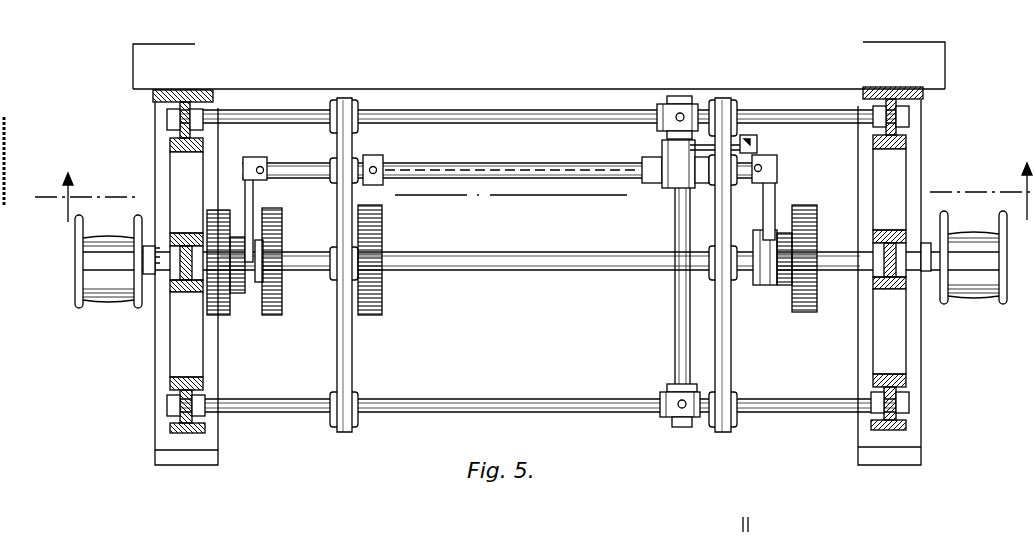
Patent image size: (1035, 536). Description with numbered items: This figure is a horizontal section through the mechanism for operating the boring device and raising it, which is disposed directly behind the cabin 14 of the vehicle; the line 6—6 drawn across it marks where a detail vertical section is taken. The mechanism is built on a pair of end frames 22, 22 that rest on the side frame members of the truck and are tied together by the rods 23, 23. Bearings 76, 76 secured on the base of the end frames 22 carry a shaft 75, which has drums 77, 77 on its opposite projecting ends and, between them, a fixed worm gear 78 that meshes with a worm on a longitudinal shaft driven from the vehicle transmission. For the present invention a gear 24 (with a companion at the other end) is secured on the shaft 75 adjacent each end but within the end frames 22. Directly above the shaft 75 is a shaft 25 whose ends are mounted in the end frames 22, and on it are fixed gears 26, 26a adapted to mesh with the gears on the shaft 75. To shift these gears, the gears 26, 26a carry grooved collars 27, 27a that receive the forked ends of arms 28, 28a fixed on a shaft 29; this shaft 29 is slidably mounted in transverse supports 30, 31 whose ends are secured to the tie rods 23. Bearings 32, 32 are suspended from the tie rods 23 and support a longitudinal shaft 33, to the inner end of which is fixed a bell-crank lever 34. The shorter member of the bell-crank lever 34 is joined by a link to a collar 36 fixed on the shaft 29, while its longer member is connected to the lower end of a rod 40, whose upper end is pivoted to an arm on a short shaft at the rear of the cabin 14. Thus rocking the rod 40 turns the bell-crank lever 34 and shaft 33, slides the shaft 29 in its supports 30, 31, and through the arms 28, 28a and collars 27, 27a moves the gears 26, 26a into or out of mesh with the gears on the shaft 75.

The cabin 14 is at (552, 66).
The section line 6 is at (532, 192).
The end frame 22 is at (177, 362).
The tie rod 23 is at (478, 119).
The gear 24 is at (282, 314).
The shaft 25 is at (547, 262).
The gear 26 is at (223, 317).
The grooved collar 27 is at (242, 292).
The gear 26a is at (802, 313).
The grooved collar 27a is at (775, 286).
The arm 28 is at (253, 160).
The arm 28a is at (777, 185).
The shaft 29 is at (293, 165).
The transverse support 30 is at (342, 207).
The transverse support 31 is at (722, 210).
The bearing 32 is at (685, 102).
The longitudinal shaft 33 is at (670, 95).
The bell-crank lever 34 is at (763, 148).
The collar 36 is at (383, 160).
The rod 40 is at (760, 138).
The shaft 75 is at (153, 296).
The bearing 76 is at (167, 300).
The drum 77 is at (77, 258).
The worm gear 78 is at (383, 302).